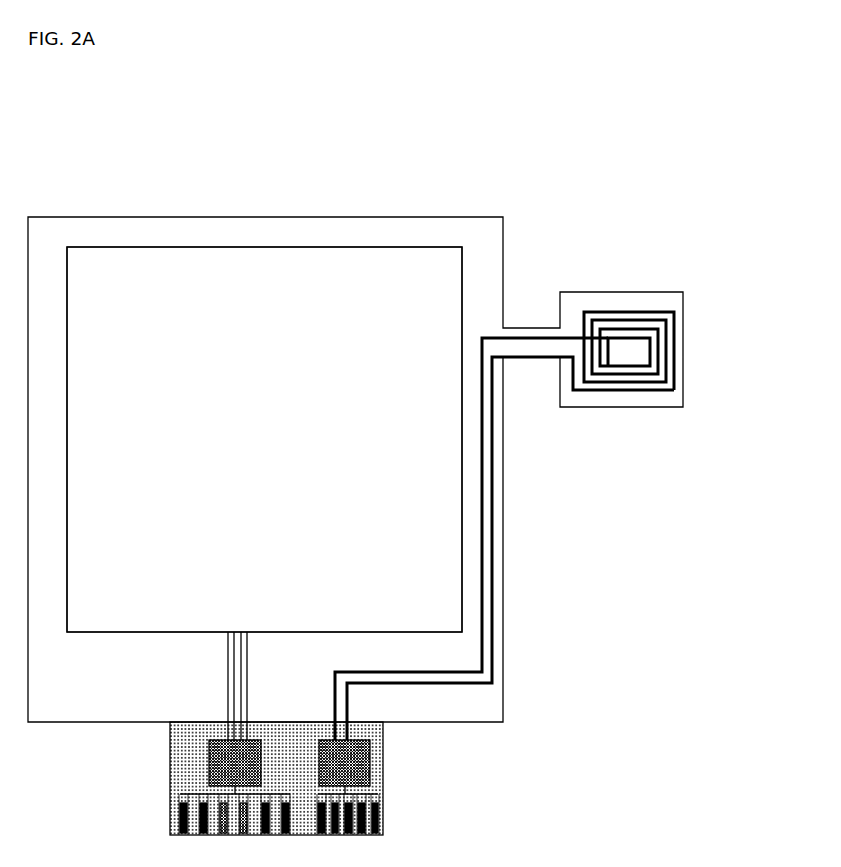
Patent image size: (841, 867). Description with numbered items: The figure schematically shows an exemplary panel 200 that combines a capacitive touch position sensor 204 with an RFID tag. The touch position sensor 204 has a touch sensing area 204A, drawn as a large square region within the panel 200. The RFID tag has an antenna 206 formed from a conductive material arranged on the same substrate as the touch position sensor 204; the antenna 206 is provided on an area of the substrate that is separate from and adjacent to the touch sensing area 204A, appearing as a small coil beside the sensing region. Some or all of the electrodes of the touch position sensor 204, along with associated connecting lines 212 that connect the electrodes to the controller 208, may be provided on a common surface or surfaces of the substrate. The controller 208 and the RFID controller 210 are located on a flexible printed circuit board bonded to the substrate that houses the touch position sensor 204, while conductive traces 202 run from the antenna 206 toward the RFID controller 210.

The panel 200 is at (552, 268).
The conductive traces / transmission line 202 is at (500, 559).
The capacitive touch position sensor 204 is at (463, 451).
The touch sensing area 204A is at (298, 503).
The antenna 206 is at (680, 337).
The controller 208 is at (197, 753).
The RFID controller 210 is at (370, 767).
The connecting lines 212 is at (210, 673).